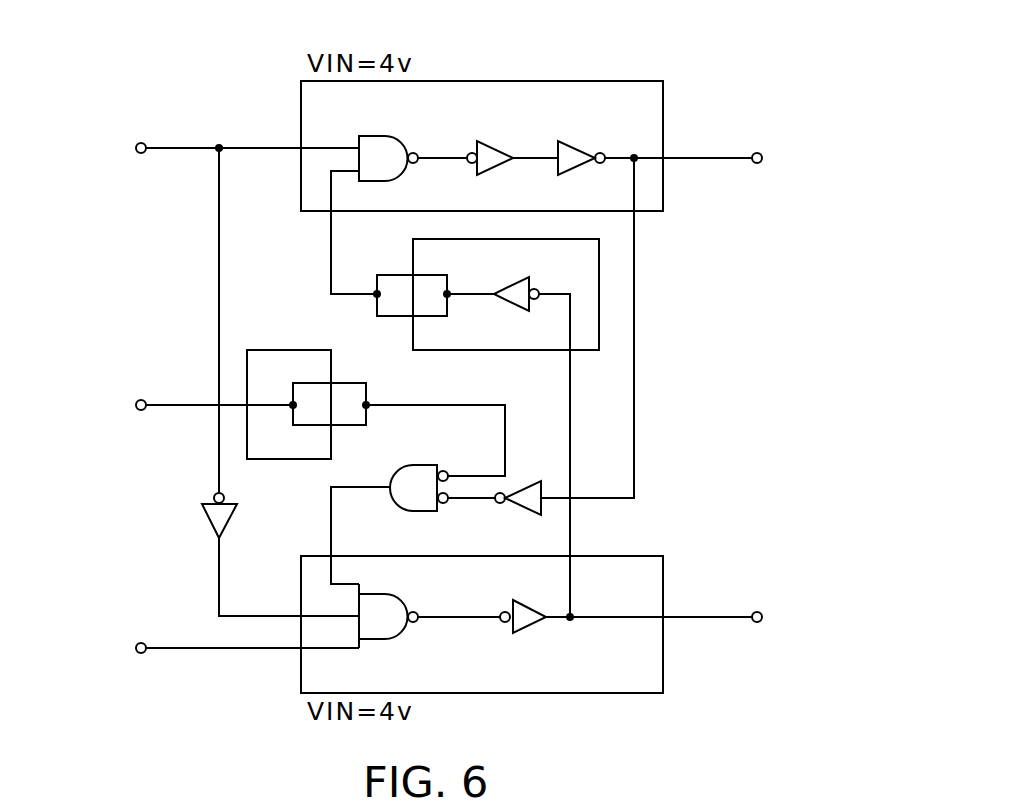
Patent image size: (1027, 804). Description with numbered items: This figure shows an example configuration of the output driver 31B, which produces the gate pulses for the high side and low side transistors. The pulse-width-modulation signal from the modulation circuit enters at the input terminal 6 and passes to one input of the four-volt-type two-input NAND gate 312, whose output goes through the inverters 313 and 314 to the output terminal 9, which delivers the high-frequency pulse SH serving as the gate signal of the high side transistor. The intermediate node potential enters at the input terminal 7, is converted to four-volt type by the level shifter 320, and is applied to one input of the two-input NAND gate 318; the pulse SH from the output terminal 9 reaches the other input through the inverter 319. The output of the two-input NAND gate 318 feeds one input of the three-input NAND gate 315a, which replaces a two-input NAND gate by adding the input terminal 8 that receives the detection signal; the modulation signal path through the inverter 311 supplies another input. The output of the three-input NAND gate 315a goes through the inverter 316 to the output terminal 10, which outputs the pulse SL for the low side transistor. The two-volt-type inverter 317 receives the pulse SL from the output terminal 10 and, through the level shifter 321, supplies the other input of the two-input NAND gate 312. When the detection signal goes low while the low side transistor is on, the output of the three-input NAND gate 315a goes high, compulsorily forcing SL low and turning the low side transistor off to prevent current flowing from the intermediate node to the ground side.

The output driver 31B is at (636, 62).
The input terminal 6 is at (141, 142).
The input terminal 7 is at (141, 399).
The input terminal 8 is at (141, 642).
The output terminal 9 is at (757, 152).
The output terminal 10 is at (757, 611).
The inverter 311 is at (205, 521).
The two-input NAND gate 312 is at (383, 136).
The inverter 313 is at (494, 139).
The inverter 314 is at (576, 139).
The three-input NAND gate 315a is at (383, 641).
The inverter 316 is at (530, 633).
The inverter 317 is at (516, 308).
The two-input NAND gate 318 is at (421, 464).
The inverter 319 is at (527, 512).
The 2V/4V level shifter 320 is at (368, 396).
The 2V/4V level shifter 321 is at (377, 310).